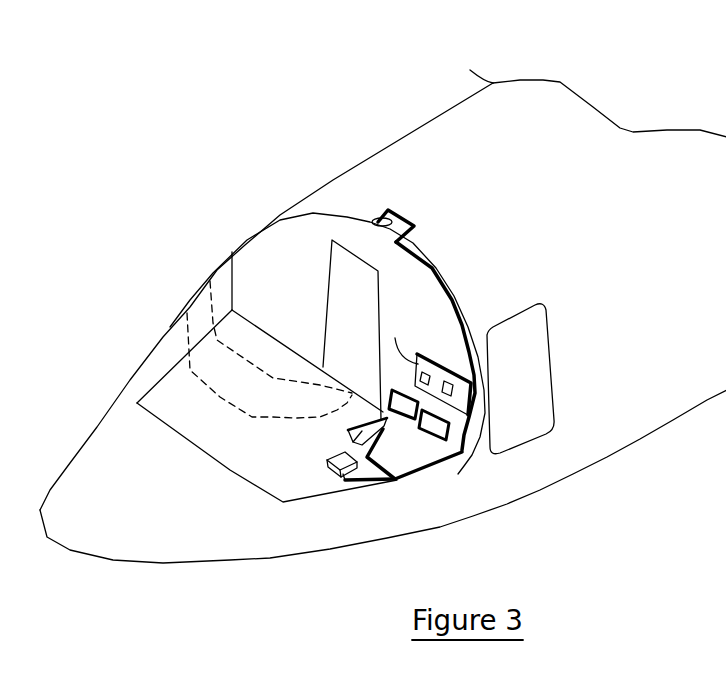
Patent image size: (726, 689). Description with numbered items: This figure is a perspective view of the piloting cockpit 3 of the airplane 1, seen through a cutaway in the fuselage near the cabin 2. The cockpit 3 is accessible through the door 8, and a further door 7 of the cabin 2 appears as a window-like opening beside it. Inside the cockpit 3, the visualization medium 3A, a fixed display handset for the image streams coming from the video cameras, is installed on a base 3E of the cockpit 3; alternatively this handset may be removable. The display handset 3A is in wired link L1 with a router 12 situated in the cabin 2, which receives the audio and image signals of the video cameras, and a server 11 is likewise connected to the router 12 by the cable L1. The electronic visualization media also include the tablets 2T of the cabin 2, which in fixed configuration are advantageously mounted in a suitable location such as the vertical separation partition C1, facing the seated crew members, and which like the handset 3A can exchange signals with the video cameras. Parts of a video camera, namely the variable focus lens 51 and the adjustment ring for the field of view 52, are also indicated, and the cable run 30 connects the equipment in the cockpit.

The airplane 1 is at (413, 108).
The cabin 2 is at (606, 205).
The piloting cockpit 3 is at (258, 294).
The visualization medium 3A is at (377, 427).
The base of the cockpit 3E is at (350, 435).
The door 7 is at (548, 367).
The door 8 is at (333, 287).
The server 11 is at (328, 464).
The router 12 is at (372, 221).
The cable harness 30 is at (382, 426).
The variable focus lens 51 is at (404, 421).
The adjustment ring for the field of view 52 is at (438, 434).
The wired link L1 is at (432, 268).
The vertical separation partition C1 is at (402, 339).
The tablets 2T is at (445, 381).